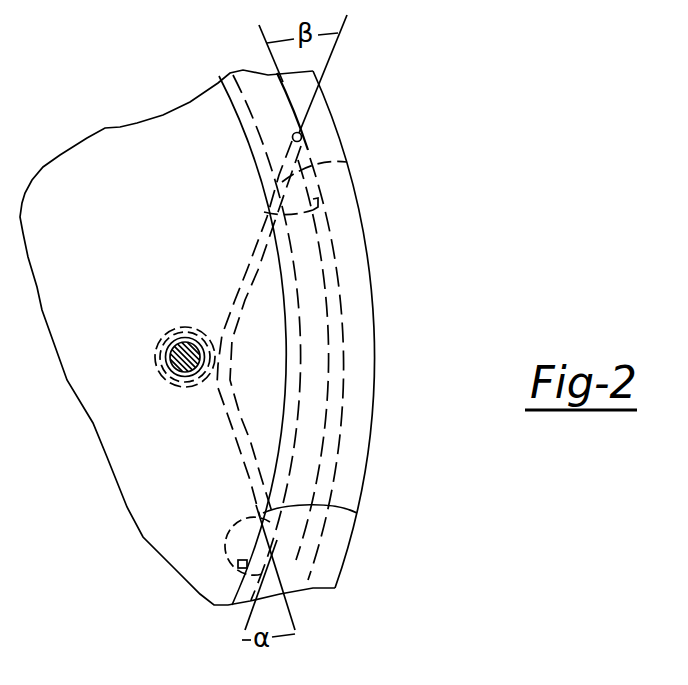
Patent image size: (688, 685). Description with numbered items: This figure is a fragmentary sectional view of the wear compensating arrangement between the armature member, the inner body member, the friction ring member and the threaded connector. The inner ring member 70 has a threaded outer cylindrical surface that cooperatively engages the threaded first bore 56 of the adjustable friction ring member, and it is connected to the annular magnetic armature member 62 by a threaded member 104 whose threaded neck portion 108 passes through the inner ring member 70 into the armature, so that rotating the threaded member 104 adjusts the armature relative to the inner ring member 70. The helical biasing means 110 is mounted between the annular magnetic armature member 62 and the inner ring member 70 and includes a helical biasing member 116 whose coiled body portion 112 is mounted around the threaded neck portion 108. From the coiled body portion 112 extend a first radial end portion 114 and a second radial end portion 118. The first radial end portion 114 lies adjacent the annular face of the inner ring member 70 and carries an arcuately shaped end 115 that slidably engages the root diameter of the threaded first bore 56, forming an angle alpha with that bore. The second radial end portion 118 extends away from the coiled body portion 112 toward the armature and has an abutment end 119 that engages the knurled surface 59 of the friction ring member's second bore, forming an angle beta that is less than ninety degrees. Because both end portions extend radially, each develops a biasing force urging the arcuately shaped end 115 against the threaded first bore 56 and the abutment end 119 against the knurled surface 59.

The threaded first bore 56 is at (287, 425).
The knurled surface 59 is at (331, 272).
The annular magnetic armature member 62 is at (266, 212).
The inner ring member 70 is at (284, 311).
The threaded member 104 is at (176, 343).
The threaded neck portion 108 is at (172, 353).
The helical biasing means 110 is at (186, 408).
The coiled body portion 112 is at (153, 368).
The first radial end portion 114 is at (357, 513).
The arcuately shaped end 115 is at (250, 566).
The helical biasing member 116 is at (230, 438).
The second radial end portion 118 is at (347, 162).
The abutment end 119 is at (301, 135).